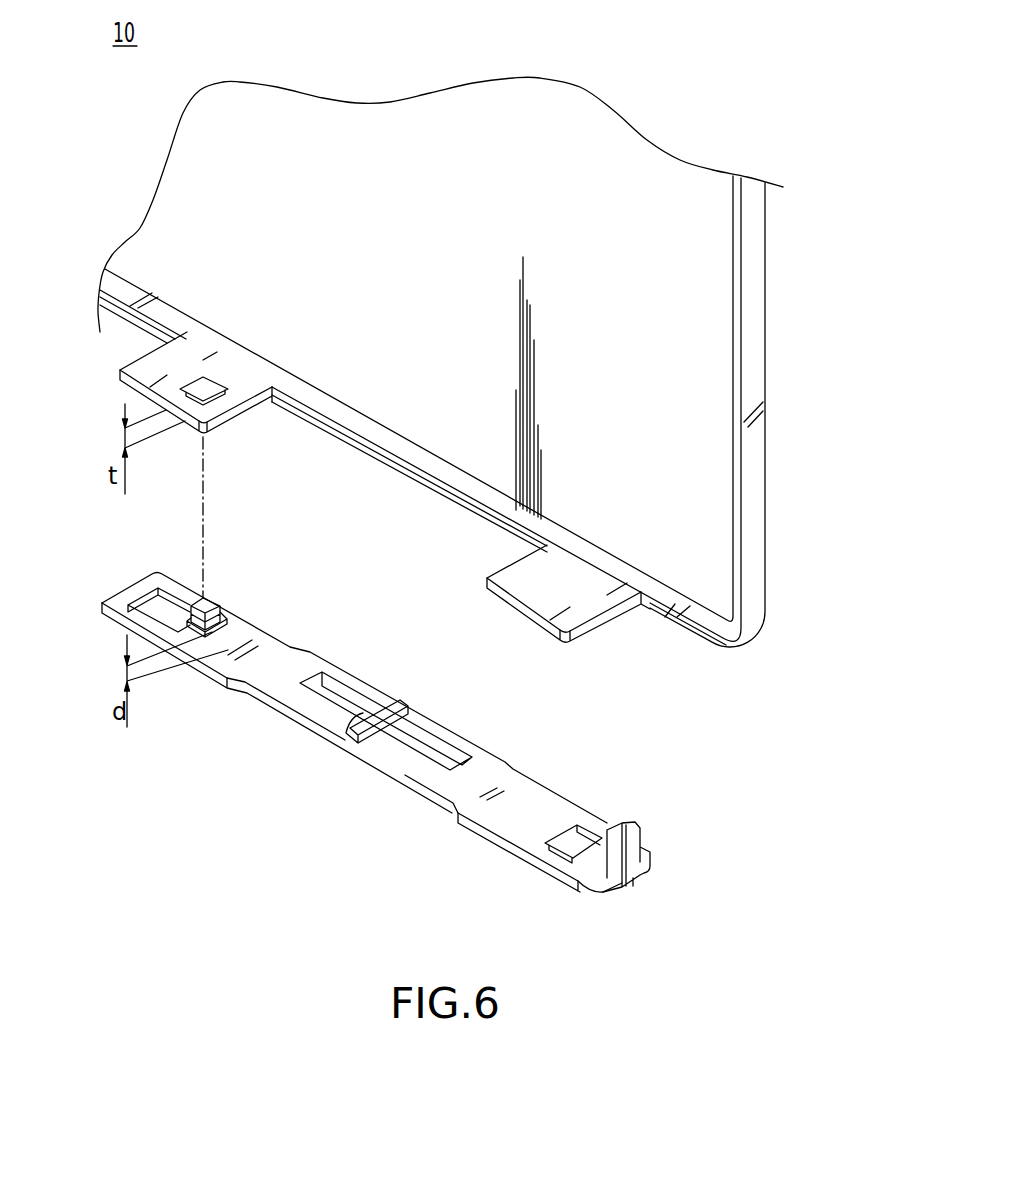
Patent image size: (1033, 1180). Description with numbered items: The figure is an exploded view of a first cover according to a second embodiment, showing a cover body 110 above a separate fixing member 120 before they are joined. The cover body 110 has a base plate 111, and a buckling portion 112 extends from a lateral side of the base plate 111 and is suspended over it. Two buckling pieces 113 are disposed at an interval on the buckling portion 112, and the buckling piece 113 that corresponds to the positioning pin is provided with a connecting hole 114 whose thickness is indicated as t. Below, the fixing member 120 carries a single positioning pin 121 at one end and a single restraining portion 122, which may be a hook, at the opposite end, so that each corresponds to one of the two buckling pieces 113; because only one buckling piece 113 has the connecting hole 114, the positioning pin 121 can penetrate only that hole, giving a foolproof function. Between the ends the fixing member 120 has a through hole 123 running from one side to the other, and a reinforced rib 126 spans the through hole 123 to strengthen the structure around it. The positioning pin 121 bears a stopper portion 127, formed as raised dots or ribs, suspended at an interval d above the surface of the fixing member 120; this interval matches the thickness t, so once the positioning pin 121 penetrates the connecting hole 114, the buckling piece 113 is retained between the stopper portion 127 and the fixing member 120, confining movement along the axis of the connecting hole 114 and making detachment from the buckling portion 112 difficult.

The cover body 110 is at (440, 362).
The base plate 111 is at (701, 178).
The buckling portion 112 is at (339, 487).
The buckling piece 113 is at (150, 384).
The connecting hole 114 is at (208, 395).
The fixing member 120 is at (405, 729).
The positioning pin 121 is at (223, 608).
The restraining portion 122 is at (634, 838).
The through hole 123 is at (346, 682).
The reinforced rib 126 is at (346, 730).
The stopper portion 127 is at (227, 626).